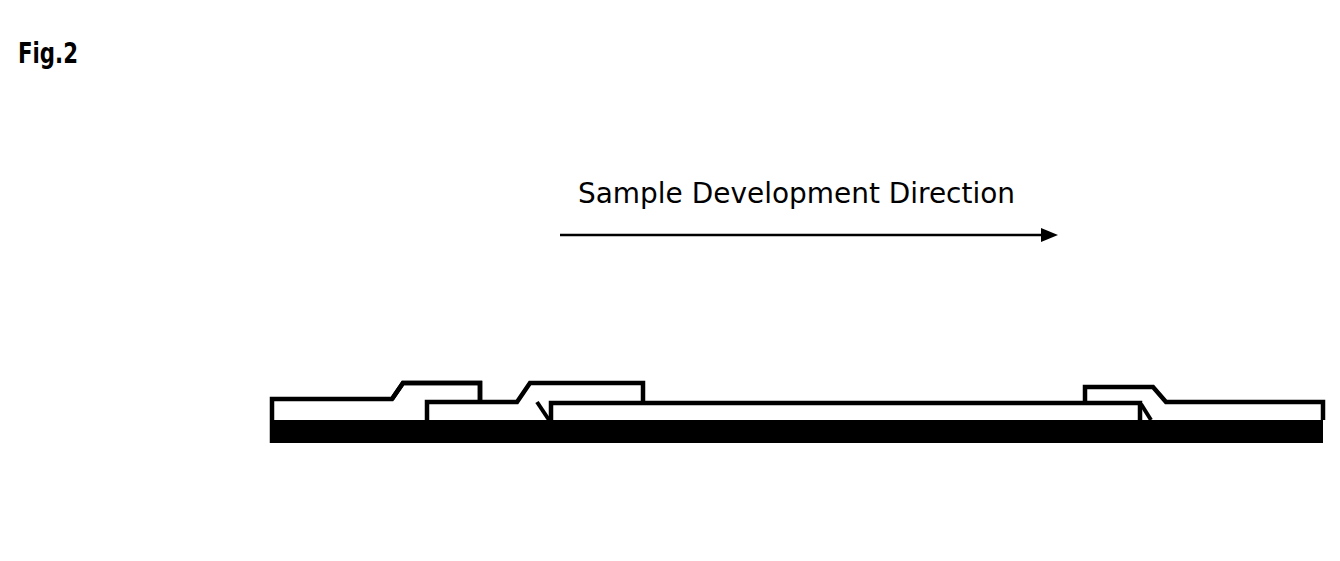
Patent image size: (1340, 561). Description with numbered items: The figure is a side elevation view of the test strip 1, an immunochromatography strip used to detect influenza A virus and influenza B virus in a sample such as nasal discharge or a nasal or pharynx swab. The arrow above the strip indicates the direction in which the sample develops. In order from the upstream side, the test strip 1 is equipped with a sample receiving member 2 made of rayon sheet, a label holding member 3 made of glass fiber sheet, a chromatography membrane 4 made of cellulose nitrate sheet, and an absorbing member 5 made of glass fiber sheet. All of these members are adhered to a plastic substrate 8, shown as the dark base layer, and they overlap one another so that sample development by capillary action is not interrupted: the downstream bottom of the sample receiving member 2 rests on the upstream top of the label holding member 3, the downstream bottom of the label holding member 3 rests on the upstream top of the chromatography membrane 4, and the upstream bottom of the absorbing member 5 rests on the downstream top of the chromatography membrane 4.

The test strip 1 is at (356, 378).
The sample receiving member 2 is at (427, 388).
The label holding member 3 is at (540, 388).
The chromatography membrane 4 is at (778, 417).
The absorbing member 5 is at (1214, 418).
The substrate 8 is at (1072, 443).